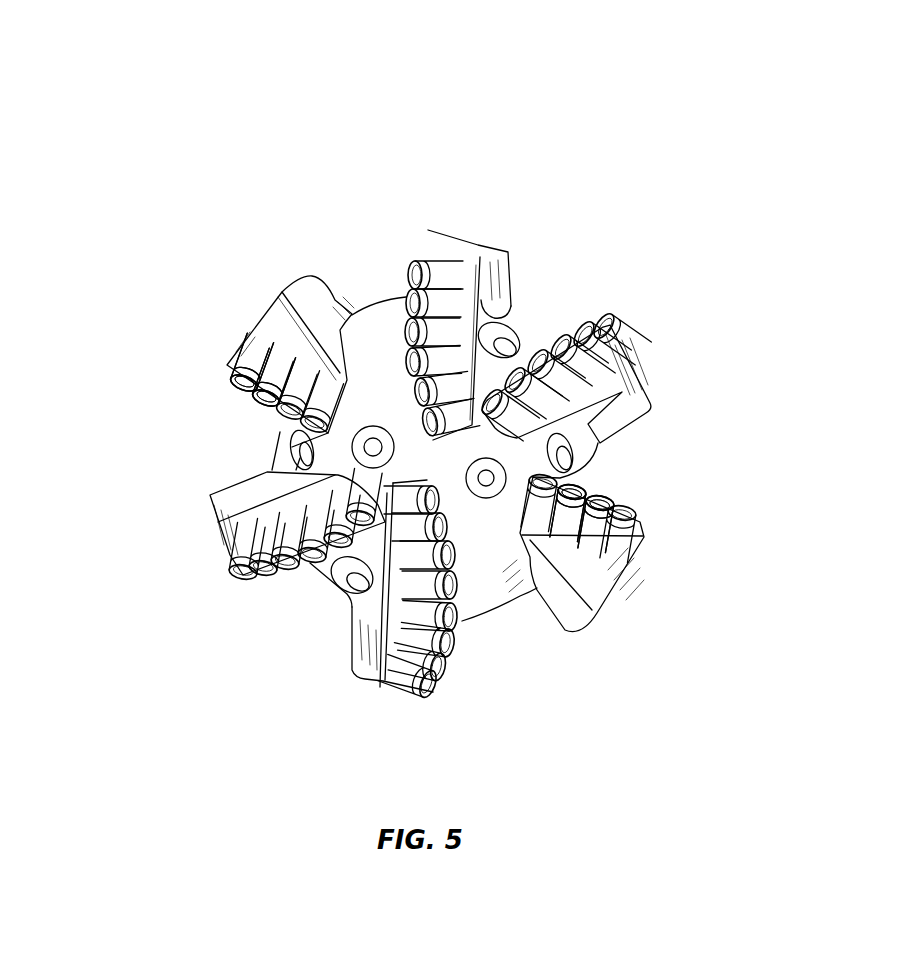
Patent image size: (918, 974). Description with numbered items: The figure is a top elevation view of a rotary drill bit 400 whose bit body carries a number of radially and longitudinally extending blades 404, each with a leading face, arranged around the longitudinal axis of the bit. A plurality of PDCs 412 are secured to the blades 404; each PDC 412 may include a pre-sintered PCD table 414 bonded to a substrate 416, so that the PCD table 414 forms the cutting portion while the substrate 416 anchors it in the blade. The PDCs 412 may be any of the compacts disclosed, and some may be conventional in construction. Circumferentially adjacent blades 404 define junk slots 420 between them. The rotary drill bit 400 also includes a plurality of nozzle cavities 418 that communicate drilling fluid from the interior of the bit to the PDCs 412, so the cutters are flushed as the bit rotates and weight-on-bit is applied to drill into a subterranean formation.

The rotary drill bit 400 is at (699, 133).
The blade 404 is at (432, 220).
The PDC 412 is at (96, 365).
The pre-sintered PCD table 414 is at (270, 410).
The substrate 416 is at (266, 390).
The nozzle cavity 418 is at (513, 342).
The junk slot 420 is at (387, 291).